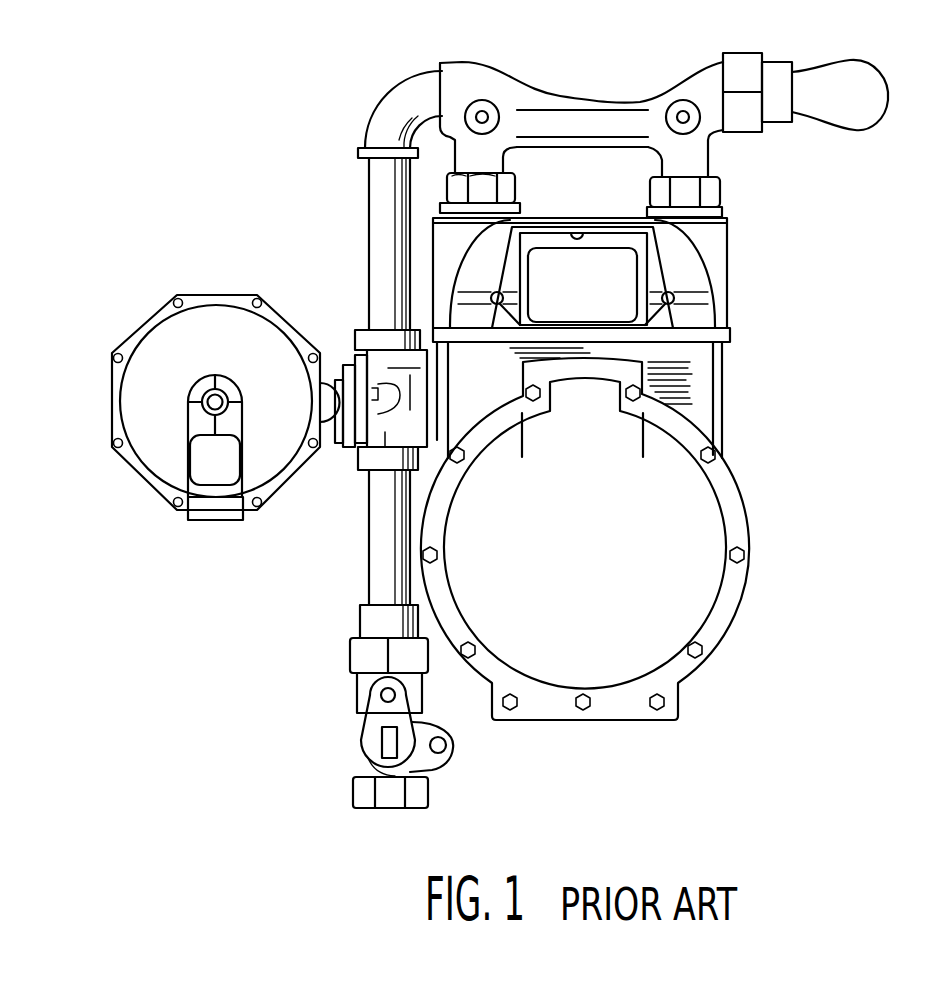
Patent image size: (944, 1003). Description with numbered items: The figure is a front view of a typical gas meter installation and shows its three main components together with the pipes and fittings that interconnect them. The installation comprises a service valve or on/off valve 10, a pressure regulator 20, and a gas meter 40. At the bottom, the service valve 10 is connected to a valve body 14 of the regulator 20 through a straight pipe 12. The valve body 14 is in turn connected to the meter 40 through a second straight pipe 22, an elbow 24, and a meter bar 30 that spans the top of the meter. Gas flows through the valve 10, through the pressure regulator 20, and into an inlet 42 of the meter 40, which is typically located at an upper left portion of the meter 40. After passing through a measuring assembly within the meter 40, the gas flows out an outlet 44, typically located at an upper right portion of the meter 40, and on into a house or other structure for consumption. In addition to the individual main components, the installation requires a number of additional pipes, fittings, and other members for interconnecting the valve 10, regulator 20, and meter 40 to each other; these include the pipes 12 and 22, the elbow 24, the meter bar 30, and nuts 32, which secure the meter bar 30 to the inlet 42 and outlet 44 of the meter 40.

The service valve 10 is at (432, 758).
The straight pipe 12 is at (380, 568).
The valve body 14 is at (388, 470).
The pressure regulator 20 is at (135, 400).
The straight pipe 22 is at (383, 228).
The elbow 24 is at (385, 112).
The meter bar 30 is at (473, 85).
The nuts 32 is at (657, 197).
The gas meter 40 is at (705, 375).
The inlet 42 is at (477, 195).
The outlet 44 is at (720, 197).